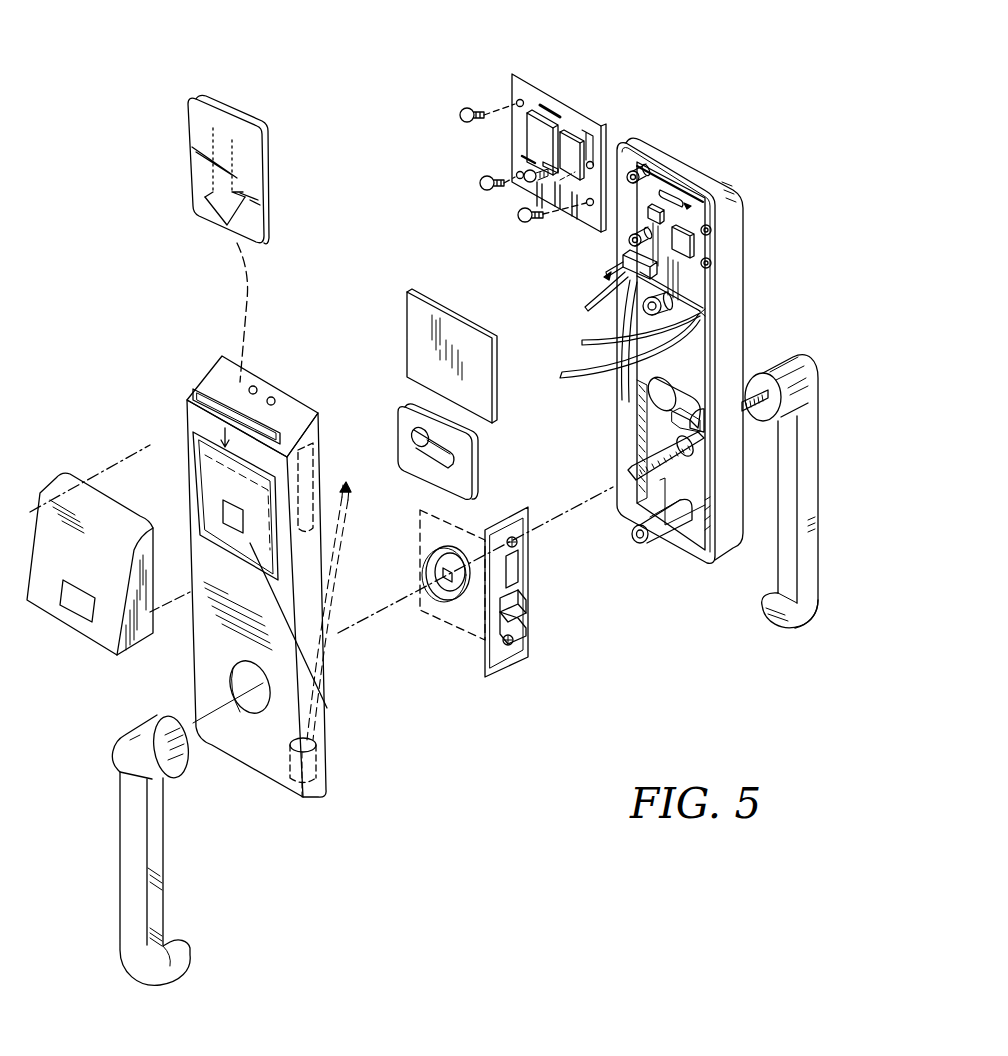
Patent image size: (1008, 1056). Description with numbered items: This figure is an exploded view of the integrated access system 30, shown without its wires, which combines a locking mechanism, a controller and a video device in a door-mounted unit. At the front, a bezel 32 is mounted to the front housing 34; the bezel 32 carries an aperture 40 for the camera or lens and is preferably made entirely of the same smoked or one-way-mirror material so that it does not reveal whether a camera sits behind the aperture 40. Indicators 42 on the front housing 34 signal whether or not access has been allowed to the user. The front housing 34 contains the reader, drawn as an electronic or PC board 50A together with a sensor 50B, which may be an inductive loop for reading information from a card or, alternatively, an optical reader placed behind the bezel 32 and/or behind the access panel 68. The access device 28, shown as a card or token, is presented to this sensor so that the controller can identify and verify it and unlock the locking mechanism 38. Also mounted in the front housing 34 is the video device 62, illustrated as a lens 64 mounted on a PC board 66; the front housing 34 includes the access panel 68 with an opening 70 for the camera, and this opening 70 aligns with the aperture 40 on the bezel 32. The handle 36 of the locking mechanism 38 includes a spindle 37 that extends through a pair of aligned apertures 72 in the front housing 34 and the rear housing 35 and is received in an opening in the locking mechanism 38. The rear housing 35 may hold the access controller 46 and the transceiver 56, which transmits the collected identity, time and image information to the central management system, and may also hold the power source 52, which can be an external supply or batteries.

The access device 28 is at (186, 169).
The integrated access system 30 is at (355, 140).
The bezel 32 is at (90, 572).
The front housing 34 is at (300, 416).
The rear housing 35 is at (671, 340).
The handle 36 is at (815, 461).
The spindle 37 is at (650, 468).
The locking mechanism 38 is at (494, 636).
The aperture 40 is at (80, 605).
The indicators 42 is at (272, 397).
The access controller 46 is at (550, 136).
The transceiver 56 is at (553, 107).
The PC board 50A is at (312, 458).
The sensor 50B is at (500, 424).
The power source 52 is at (675, 395).
The video device 62 is at (490, 437).
The lens 64 is at (432, 463).
The PC board 66 is at (447, 472).
The access panel 68 is at (304, 638).
The opening 70 is at (218, 509).
The apertures 72 is at (255, 697).